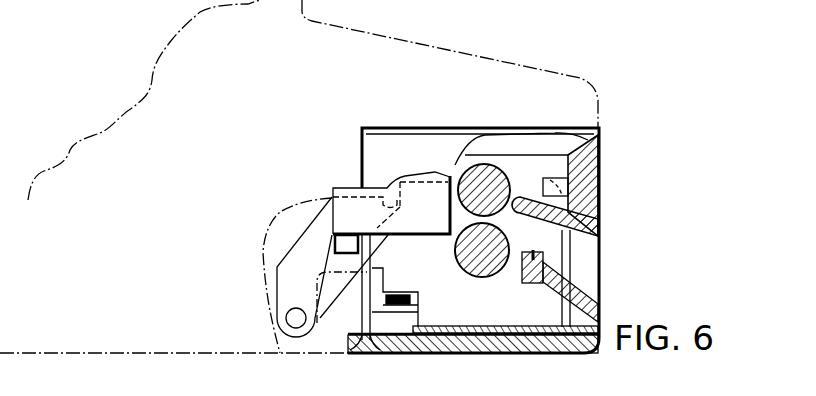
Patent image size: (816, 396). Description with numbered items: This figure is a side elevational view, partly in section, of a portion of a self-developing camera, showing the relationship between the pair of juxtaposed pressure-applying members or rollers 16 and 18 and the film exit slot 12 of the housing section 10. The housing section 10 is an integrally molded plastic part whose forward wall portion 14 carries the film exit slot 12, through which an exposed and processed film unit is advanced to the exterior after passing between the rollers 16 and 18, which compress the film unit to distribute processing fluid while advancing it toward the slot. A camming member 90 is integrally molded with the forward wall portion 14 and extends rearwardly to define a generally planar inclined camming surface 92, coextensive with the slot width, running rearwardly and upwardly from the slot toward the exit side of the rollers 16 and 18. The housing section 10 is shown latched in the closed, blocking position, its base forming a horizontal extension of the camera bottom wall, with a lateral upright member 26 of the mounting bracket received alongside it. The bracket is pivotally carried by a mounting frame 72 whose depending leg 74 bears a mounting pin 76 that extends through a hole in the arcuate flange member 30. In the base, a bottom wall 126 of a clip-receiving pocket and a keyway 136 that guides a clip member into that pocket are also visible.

The housing section 10 is at (620, 167).
The film exit slot 12 is at (588, 272).
The forward wall portion 14 is at (600, 194).
The pressure-applying member 16 is at (467, 165).
The pressure-applying member 18 is at (501, 277).
The lateral upright member 26 is at (522, 188).
The arcuate flange member 30 is at (297, 237).
The mounting frame 72 is at (332, 190).
The depending leg 74 is at (292, 292).
The mounting pin 76 is at (286, 318).
The camming member 90 is at (533, 195).
The camming surface 92 is at (545, 219).
The bottom wall 126 is at (421, 338).
The keyway 136 is at (393, 337).